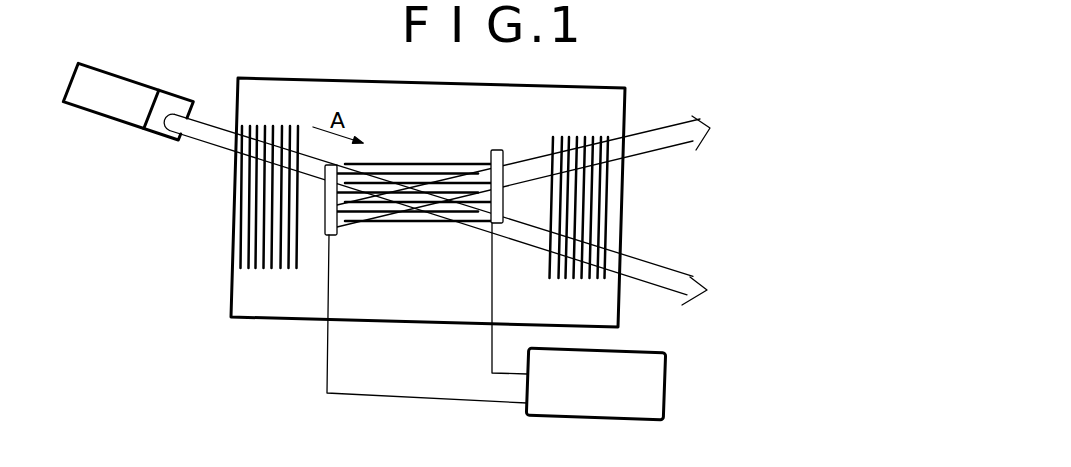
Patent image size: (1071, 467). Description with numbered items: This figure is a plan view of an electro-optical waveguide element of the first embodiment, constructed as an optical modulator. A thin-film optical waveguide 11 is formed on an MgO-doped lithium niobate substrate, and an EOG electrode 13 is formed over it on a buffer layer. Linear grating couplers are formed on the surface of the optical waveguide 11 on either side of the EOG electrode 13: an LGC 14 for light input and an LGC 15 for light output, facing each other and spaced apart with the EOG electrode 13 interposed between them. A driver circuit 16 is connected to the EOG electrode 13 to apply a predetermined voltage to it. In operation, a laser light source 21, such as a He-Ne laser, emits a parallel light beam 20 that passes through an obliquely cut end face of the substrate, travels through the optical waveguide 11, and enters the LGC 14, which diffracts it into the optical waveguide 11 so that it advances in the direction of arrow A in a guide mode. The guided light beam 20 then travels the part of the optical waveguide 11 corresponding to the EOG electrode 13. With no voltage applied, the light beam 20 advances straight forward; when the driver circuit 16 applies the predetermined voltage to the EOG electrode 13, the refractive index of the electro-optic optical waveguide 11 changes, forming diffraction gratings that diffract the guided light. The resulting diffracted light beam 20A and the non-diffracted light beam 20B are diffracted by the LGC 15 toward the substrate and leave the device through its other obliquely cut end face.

The thin-film optical waveguide 11 is at (282, 298).
The EOG electrode 13 is at (440, 162).
The linear grating coupler for light input 14 is at (247, 231).
The linear grating coupler for light output 15 is at (592, 200).
The driver circuit 16 is at (668, 407).
The light beam 20 is at (210, 140).
The diffracted light beam 20A is at (663, 130).
The non-diffracted light beam 20B is at (670, 277).
The laser light source 21 is at (145, 88).